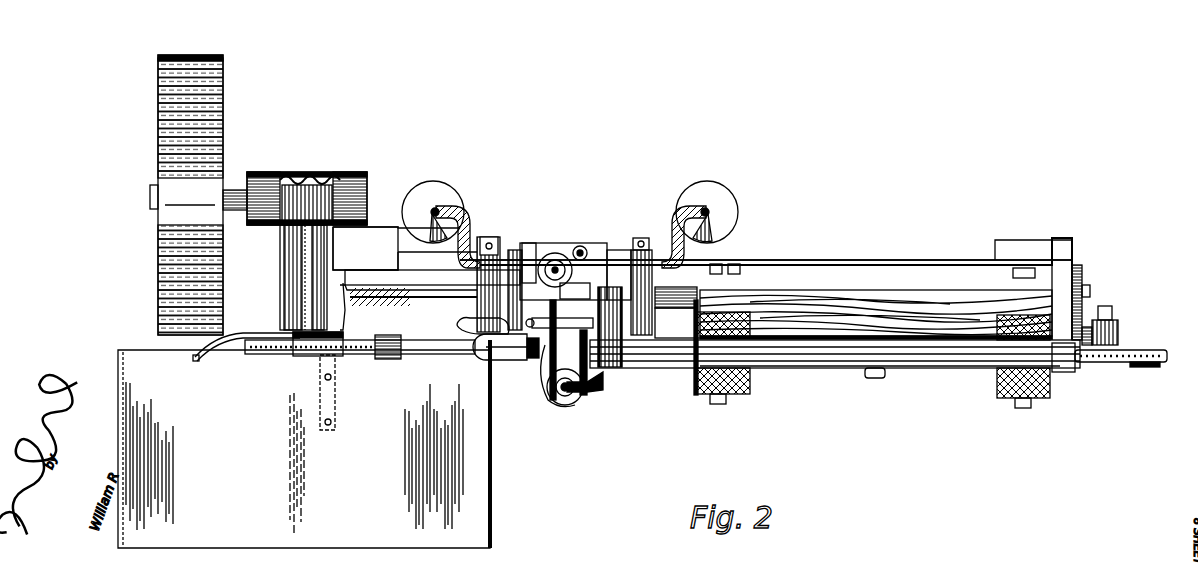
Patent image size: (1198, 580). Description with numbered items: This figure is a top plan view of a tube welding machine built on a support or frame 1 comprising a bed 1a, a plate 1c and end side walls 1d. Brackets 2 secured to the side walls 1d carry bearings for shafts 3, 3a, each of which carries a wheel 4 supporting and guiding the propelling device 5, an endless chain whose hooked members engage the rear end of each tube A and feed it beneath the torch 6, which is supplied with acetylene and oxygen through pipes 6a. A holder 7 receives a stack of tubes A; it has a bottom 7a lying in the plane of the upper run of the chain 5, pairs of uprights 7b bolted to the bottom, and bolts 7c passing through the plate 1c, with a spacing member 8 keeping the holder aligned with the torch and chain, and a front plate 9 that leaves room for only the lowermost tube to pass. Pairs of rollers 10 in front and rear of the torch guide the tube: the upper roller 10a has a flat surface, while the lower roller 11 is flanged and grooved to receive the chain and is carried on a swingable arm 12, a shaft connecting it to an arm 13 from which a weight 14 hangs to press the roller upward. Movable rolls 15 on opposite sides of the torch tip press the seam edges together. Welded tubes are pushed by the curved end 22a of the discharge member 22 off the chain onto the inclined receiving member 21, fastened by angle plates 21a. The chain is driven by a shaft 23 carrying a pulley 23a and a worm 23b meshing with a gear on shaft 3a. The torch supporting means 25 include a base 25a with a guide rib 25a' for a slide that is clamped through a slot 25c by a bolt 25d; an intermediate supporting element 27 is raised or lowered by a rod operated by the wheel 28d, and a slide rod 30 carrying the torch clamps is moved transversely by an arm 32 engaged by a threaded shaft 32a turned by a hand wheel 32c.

The support or frame 1 is at (783, 262).
The bed 1a is at (838, 260).
The plate 1c is at (428, 285).
The side walls 1d is at (345, 249).
The brackets 2 is at (1085, 305).
The shaft 3 is at (1112, 310).
The shaft 3a is at (278, 292).
The wheel 4 is at (1155, 366).
The propelling device or chain 5 is at (1160, 352).
The torch 6 is at (540, 365).
The pipes 6a is at (460, 335).
The holder or supply chamber 7 is at (855, 373).
The bottom or supporting member 7a is at (805, 372).
The uprights 7b is at (735, 312).
The bolts 7c is at (722, 405).
The spacing member 8 is at (925, 290).
The plate 9 is at (695, 372).
The rollers 10 is at (131, 56).
The upper roller 10a is at (622, 370).
The lower roller 11 is at (240, 162).
The swingable arm 12 is at (665, 326).
The arm 13 is at (470, 222).
The weight 14 is at (438, 183).
The movable rolls 15 is at (572, 404).
The receiving member 21 is at (305, 444).
The angle plates 21a is at (340, 418).
The discharge member 22 is at (240, 345).
The curved outer end 22a is at (197, 362).
The shaft 23 is at (148, 197).
The pulley 23a is at (158, 268).
The worm 23b is at (300, 178).
The torch supporting means 25 is at (563, 252).
The base 25a is at (528, 263).
The guide rib 25a' is at (546, 243).
The elongated slot 25c is at (584, 248).
The bolt 25d is at (605, 250).
The intermediate supporting element 27 is at (630, 250).
The wheel 28d is at (575, 252).
The slide rod 30 is at (480, 277).
The arm 32 is at (520, 365).
The shaft 32a is at (605, 380).
The hand wheel 32c is at (598, 395).
The tube A is at (668, 380).